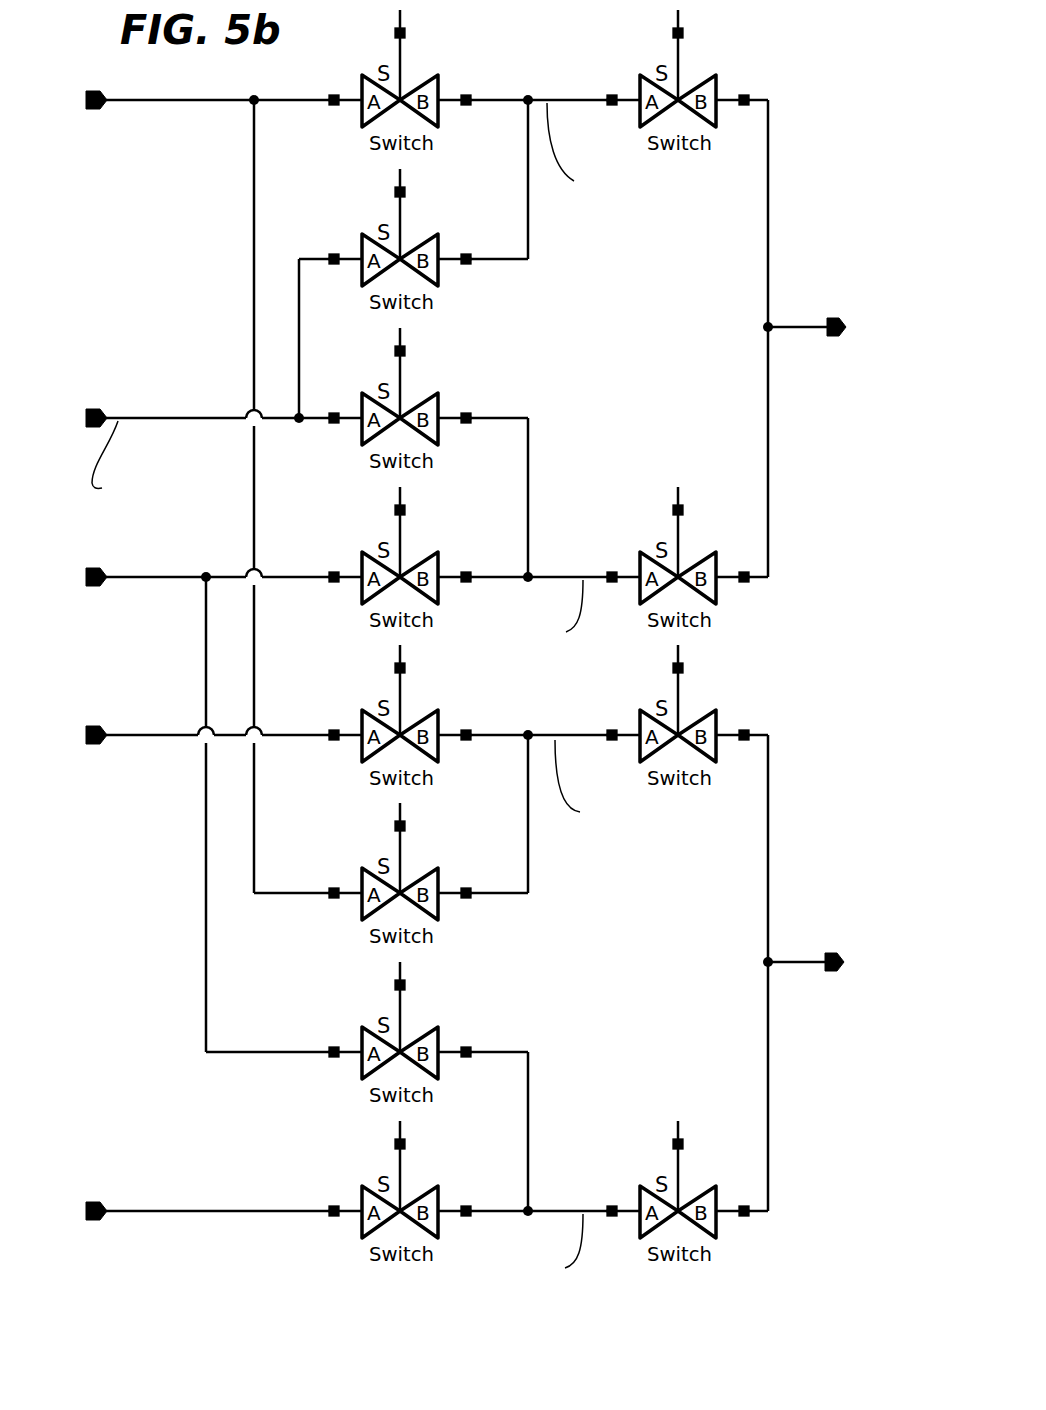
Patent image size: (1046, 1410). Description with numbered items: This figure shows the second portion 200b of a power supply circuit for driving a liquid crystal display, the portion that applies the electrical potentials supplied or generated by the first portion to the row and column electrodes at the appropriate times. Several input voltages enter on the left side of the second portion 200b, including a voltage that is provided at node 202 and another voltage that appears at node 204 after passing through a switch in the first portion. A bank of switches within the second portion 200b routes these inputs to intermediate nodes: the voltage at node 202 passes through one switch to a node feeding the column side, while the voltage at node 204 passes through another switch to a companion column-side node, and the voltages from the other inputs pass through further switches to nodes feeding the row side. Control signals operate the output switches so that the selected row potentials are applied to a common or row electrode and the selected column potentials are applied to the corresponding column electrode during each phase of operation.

The second portion 200b is at (268, 1223).
The node 202 is at (94, 1223).
The node 204 is at (94, 746).